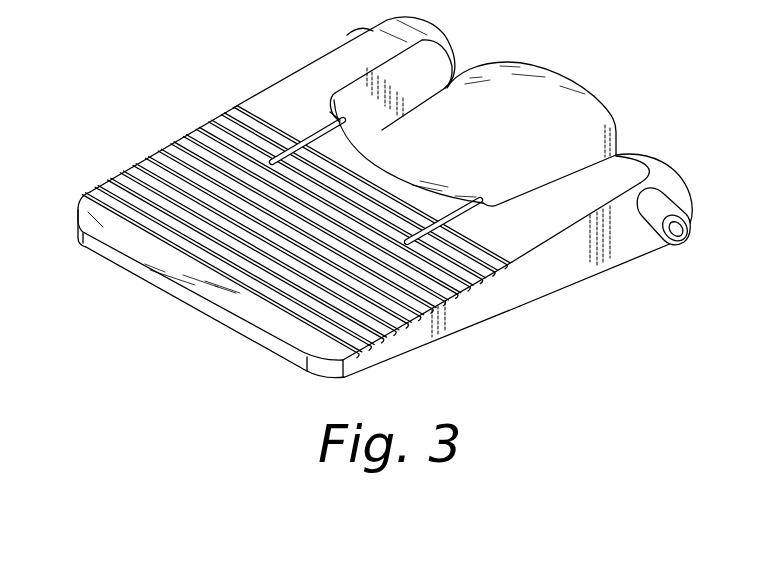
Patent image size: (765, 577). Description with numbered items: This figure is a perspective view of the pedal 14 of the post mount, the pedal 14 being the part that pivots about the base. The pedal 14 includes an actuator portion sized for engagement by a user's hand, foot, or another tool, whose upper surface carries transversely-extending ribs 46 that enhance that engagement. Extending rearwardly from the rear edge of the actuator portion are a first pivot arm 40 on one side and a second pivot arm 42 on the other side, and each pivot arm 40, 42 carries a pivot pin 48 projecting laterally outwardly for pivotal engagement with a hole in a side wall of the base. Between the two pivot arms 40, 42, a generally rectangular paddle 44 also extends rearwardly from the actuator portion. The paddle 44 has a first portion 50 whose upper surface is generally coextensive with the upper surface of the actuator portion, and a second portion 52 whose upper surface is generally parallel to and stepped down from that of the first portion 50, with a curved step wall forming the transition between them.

The pedal 14 is at (79, 208).
The first pivot arm 40 is at (545, 237).
The second pivot arm 42 is at (320, 98).
The paddle 44 is at (352, 165).
The transversely-extending ribs 46 is at (137, 174).
The pivot pin 48 is at (672, 246).
The first portion 50 is at (453, 204).
The second portion 52 is at (587, 111).